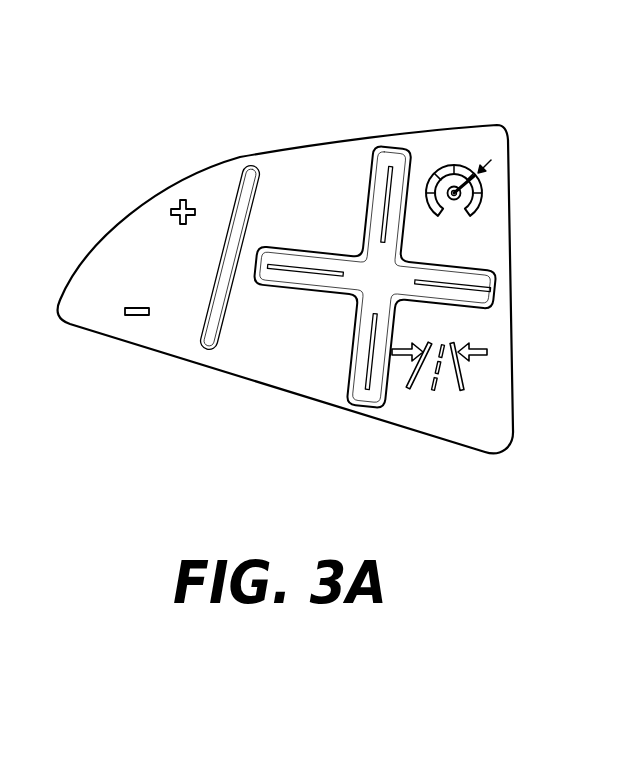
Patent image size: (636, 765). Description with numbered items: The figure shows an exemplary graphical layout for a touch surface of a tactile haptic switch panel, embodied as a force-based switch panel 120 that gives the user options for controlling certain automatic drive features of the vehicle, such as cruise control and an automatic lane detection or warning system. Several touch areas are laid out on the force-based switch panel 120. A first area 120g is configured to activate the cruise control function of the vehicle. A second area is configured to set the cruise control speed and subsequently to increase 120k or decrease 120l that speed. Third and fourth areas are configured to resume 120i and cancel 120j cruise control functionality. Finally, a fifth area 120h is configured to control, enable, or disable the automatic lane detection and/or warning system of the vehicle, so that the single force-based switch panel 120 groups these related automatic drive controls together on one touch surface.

The force-based switch panel 120 is at (512, 88).
The cruise control activation area 120g is at (435, 152).
The lane keeping assist button 120h is at (483, 400).
The resume area 120i is at (313, 173).
The cancel area 120j is at (288, 360).
The speed increase area 120k is at (185, 187).
The speed decrease area 120l is at (137, 327).